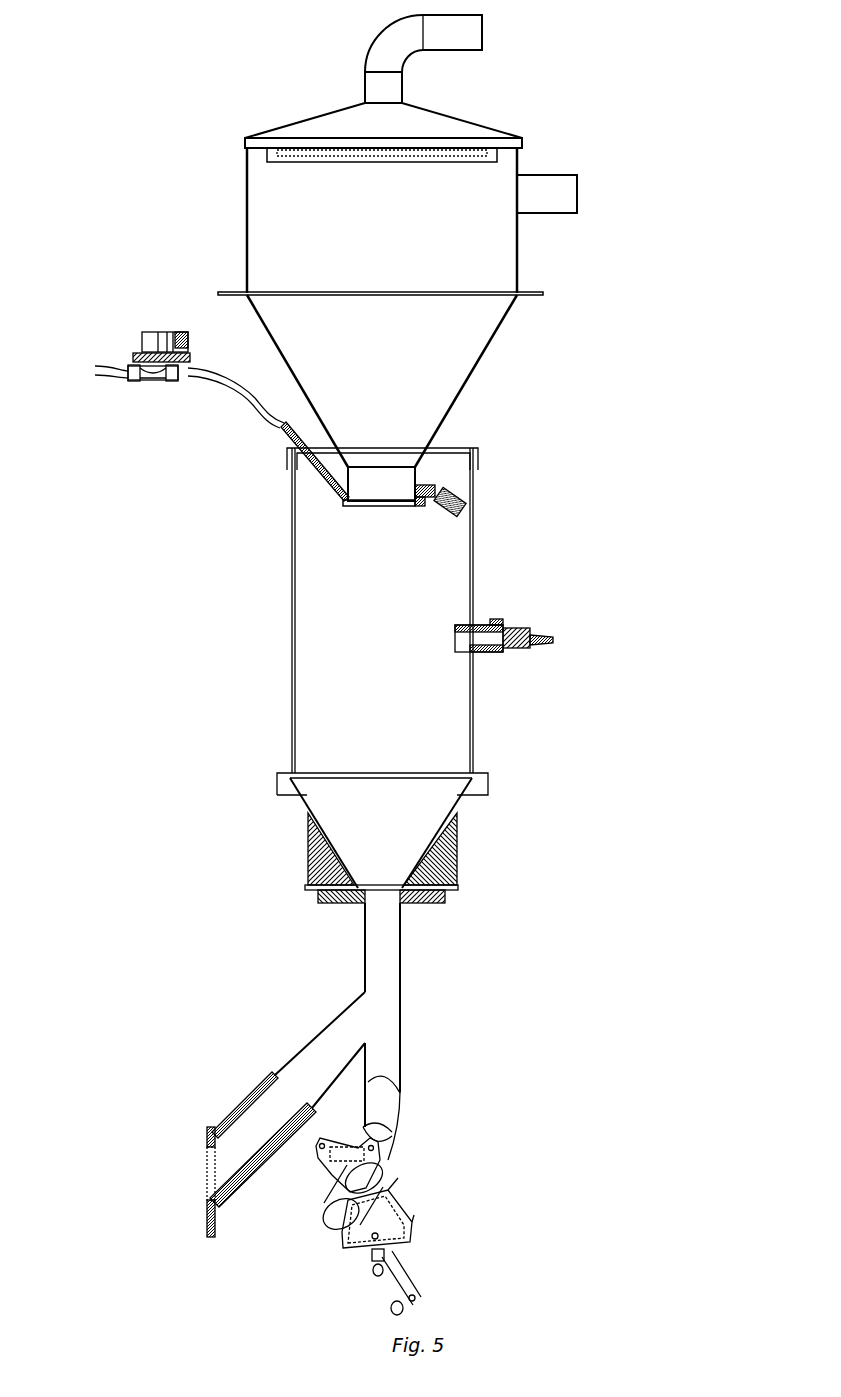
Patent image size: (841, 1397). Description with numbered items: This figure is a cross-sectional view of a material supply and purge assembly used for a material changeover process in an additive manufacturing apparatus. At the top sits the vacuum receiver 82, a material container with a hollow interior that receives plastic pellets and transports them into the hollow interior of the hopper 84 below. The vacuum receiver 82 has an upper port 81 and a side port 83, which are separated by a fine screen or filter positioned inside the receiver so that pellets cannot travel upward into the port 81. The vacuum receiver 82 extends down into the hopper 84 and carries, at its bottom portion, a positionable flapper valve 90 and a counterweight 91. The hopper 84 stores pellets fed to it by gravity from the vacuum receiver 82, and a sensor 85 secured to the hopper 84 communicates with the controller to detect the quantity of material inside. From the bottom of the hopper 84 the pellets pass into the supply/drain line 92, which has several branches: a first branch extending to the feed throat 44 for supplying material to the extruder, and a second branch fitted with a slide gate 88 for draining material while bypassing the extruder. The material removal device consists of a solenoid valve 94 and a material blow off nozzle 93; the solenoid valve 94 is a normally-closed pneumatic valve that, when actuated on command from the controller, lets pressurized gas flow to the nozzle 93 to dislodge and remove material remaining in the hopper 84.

The feed throat 44 is at (243, 1105).
The port 81 is at (482, 33).
The vacuum receiver 82 is at (380, 265).
The port 83 is at (577, 193).
The hopper 84 is at (383, 572).
The sensor 85 is at (553, 640).
The slide gate 88 is at (403, 1183).
The flapper valve 90 is at (392, 506).
The counterweight 91 is at (457, 498).
The supply/drain line 92 is at (385, 985).
The material blow off nozzle 93 is at (303, 474).
The solenoid valve 94 is at (150, 382).